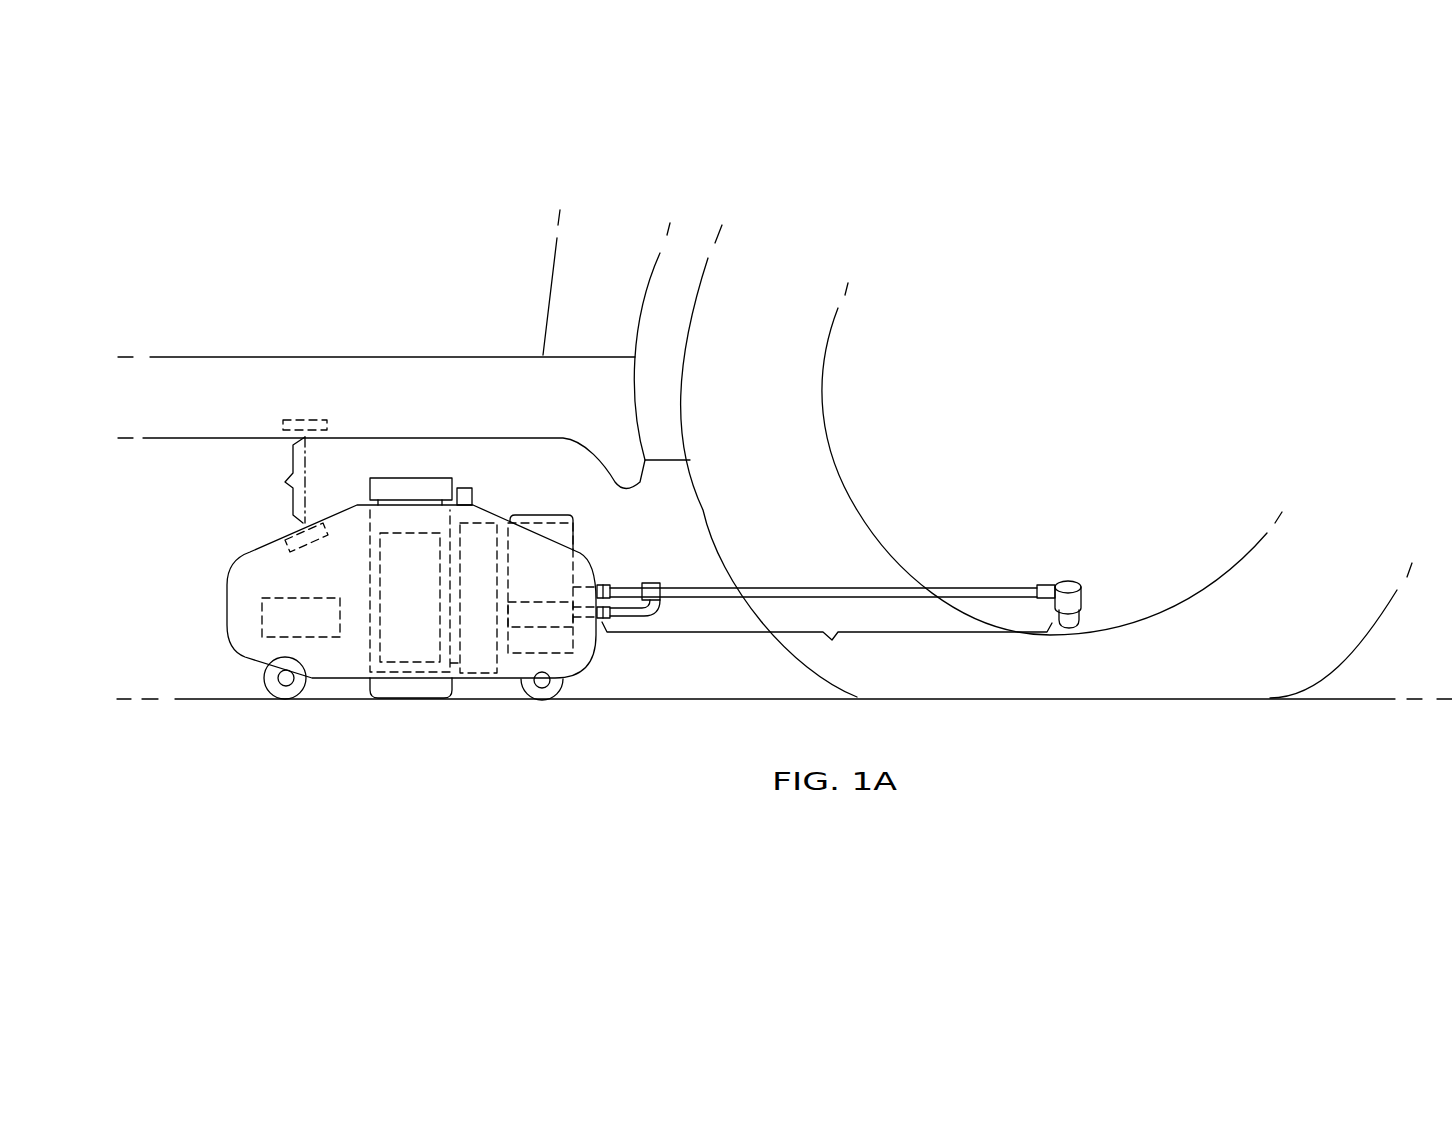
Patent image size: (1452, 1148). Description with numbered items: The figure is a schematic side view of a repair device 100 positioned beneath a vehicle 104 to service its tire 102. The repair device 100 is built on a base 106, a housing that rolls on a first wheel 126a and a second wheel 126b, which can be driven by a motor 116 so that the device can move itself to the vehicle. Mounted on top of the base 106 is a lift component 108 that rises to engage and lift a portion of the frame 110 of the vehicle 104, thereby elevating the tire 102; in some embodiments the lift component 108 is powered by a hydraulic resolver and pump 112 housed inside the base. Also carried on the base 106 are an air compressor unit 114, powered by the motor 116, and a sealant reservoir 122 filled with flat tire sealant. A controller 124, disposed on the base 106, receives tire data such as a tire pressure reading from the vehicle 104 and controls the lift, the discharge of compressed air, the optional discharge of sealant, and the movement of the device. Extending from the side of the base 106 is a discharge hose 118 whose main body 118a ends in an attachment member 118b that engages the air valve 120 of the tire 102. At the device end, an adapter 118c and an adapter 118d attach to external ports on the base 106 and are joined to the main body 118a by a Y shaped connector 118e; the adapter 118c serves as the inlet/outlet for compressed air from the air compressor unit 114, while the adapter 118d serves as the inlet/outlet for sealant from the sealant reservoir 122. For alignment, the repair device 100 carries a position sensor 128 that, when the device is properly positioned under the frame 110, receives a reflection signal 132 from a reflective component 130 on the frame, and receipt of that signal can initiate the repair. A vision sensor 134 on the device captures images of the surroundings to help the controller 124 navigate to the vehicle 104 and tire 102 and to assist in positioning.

The repair device 100 is at (226, 560).
The tire 102 is at (1324, 605).
The vehicle 104 is at (350, 284).
The base 106 is at (228, 593).
The lift component 108 is at (435, 478).
The frame 110 is at (202, 409).
The hydraulic resolver and pump 112 is at (485, 523).
The air compressor unit 114 is at (538, 515).
The motor 116 is at (523, 648).
The discharge hose 118 is at (850, 586).
The main body 118a is at (828, 629).
The attachment member 118b is at (1078, 598).
The adapter 118c is at (634, 584).
The adapter 118d is at (645, 617).
The Y shaped connector 118e is at (652, 583).
The air valve 120 is at (1070, 622).
The sealant reservoir 122 is at (546, 614).
The controller 124 is at (262, 618).
The first wheel 126a is at (309, 681).
The second wheel 126b is at (563, 688).
The position sensor 128 is at (290, 524).
The reflective component 130 is at (318, 422).
The reflection signal 132 is at (285, 481).
The vision sensor 134 is at (463, 488).